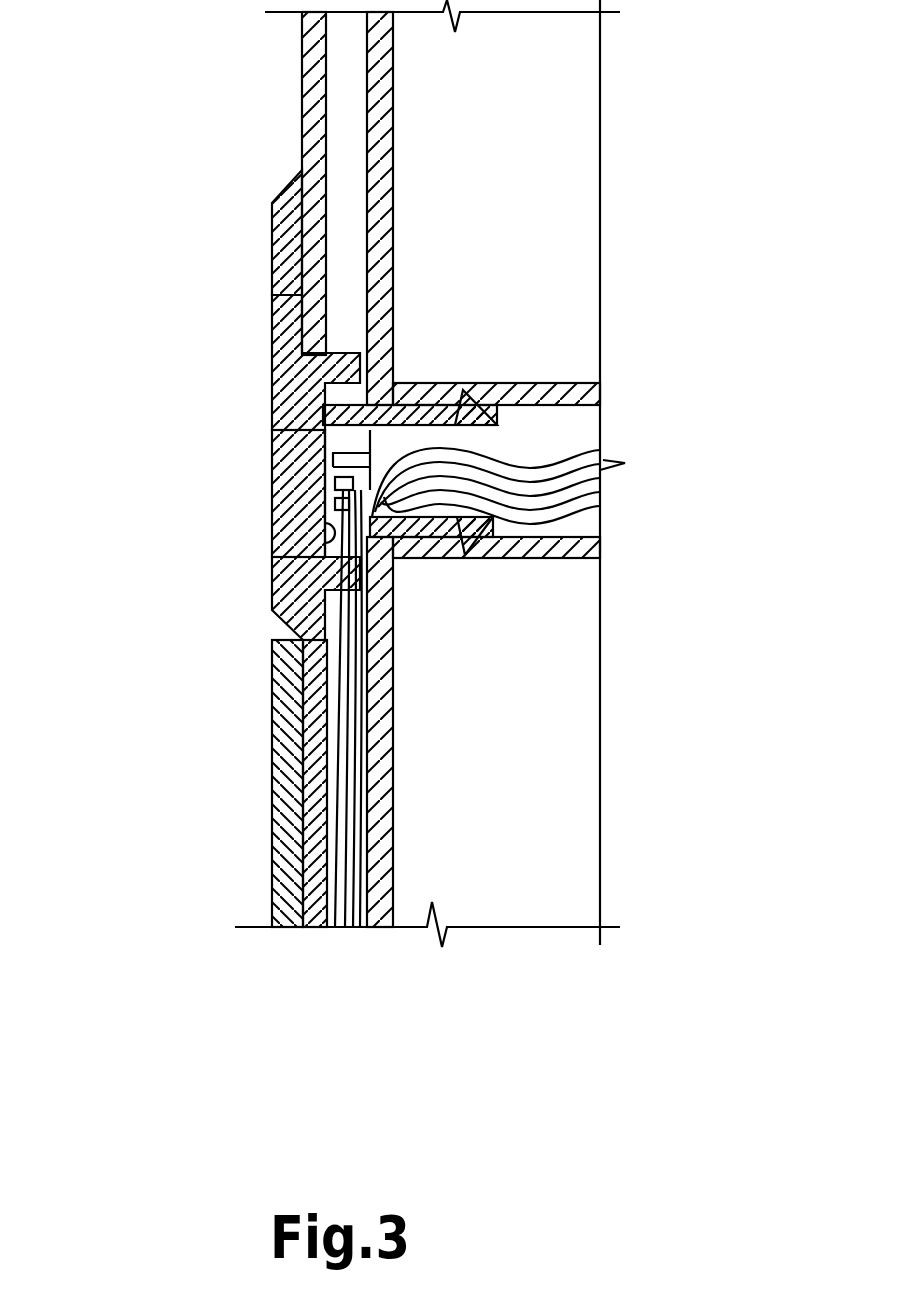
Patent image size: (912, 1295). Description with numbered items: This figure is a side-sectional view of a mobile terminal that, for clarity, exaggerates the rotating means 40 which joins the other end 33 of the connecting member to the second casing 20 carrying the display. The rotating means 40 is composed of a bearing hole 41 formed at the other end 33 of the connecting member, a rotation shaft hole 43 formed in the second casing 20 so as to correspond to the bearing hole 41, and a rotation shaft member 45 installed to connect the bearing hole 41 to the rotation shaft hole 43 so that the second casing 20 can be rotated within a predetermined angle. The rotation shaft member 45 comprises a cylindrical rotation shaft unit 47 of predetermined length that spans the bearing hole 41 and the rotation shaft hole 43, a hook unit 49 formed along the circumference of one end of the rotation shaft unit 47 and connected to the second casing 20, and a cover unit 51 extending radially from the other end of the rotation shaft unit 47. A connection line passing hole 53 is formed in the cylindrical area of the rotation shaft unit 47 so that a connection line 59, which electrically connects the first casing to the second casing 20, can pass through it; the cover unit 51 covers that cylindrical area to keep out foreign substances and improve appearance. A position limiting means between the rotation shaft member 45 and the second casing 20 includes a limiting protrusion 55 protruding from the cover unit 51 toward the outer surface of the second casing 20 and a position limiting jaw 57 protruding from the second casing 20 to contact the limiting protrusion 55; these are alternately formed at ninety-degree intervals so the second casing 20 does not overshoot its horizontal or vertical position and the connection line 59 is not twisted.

The second casing 20 is at (302, 72).
The other end of the connecting member 33 is at (272, 240).
The rotating means 40 is at (92, 328).
The bearing hole 41 is at (280, 628).
The rotation shaft hole 43 is at (272, 335).
The rotation shaft member 45 is at (234, 478).
The rotation shaft unit 47 is at (272, 437).
The hook unit 49 is at (272, 390).
The cover unit 51 is at (272, 507).
The connection line passing hole 53 is at (252, 549).
The limiting protrusion 55 is at (378, 380).
The position limiting jaw 57 is at (378, 520).
The connection line 59 is at (345, 800).